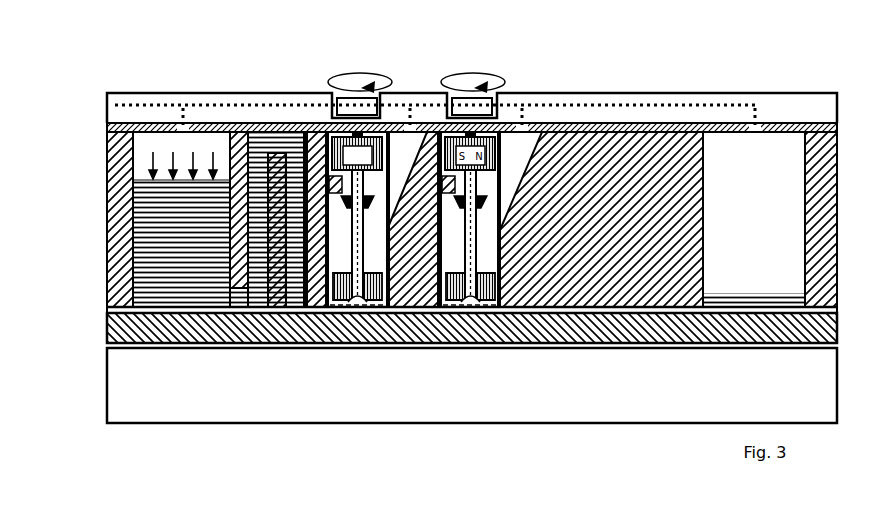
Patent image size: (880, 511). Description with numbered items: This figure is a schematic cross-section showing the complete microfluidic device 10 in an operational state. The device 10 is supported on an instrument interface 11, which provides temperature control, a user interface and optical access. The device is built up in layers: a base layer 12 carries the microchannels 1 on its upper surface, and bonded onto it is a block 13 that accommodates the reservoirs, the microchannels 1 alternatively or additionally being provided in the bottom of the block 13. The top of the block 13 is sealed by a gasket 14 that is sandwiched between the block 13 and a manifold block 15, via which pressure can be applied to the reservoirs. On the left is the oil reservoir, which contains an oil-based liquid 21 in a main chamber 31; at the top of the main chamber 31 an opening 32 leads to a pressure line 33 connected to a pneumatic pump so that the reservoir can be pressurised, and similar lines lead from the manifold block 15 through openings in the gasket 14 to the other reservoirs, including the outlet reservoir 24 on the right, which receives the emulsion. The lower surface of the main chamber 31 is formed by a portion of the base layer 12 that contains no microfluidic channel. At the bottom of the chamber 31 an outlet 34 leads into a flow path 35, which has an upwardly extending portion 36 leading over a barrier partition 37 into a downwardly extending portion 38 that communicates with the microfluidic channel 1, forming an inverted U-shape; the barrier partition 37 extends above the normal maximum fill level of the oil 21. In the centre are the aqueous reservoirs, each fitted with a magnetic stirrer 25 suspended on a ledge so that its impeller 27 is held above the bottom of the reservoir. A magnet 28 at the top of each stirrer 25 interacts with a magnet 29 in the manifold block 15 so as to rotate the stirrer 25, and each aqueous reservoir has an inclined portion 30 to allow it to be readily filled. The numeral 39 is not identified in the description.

The microchannel 1 is at (588, 303).
The microfluidic device 10 is at (835, 73).
The instrument interface 11 is at (815, 385).
The base layer 12 is at (838, 322).
The block 13 is at (820, 195).
The gasket 14 is at (837, 125).
The manifold block 15 is at (769, 107).
The oil-based liquid 21 is at (155, 260).
The outlet reservoir 24 is at (754, 219).
The magnetic stirrer 25 is at (447, 123).
The impeller 27 is at (368, 298).
The magnet 28 is at (333, 125).
The magnet 29 is at (348, 95).
The inclined portion 30 is at (517, 152).
The main chamber 31 is at (125, 210).
The opening 32 is at (182, 123).
The pressure line 33 is at (115, 105).
The outlet 34 is at (235, 300).
The flow path 35 is at (249, 128).
The upwardly extending portion 36 is at (260, 247).
The barrier partition 37 is at (277, 172).
The downwardly extending portion 38 is at (296, 250).
The partition base 39 is at (276, 300).